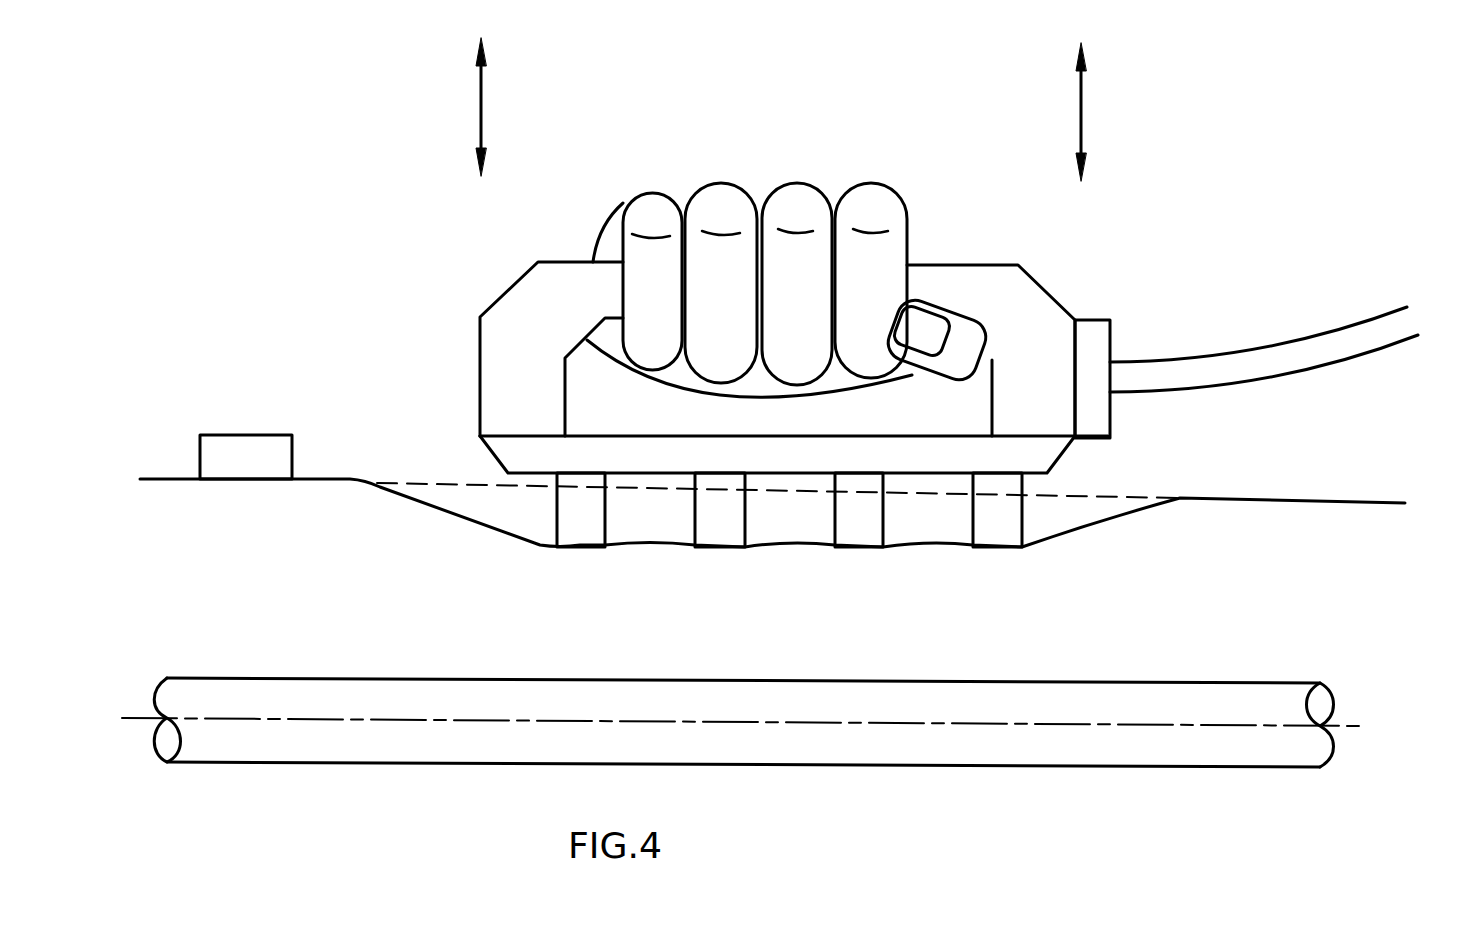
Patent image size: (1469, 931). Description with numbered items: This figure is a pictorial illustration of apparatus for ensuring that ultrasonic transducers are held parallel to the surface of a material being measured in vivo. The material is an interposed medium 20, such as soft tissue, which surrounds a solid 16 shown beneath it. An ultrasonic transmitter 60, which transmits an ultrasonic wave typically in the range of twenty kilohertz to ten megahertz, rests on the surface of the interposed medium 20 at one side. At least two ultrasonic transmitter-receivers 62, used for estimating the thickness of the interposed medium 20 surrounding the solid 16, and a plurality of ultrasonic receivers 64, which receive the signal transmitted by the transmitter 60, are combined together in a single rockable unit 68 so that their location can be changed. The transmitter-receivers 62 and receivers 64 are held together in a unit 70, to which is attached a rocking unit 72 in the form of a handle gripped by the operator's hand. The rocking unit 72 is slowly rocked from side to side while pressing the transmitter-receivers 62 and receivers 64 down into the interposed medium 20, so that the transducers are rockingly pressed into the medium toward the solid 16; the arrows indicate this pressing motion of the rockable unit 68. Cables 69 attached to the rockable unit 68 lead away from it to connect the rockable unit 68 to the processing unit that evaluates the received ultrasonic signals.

The solid 16 is at (252, 685).
The interposed medium 20 is at (205, 582).
The ultrasonic transmitter 60 is at (262, 446).
The ultrasonic transmitter-receivers 62 is at (570, 517).
The ultrasonic receivers 64 is at (693, 520).
The rockable unit 68 is at (462, 203).
The cables 69 is at (1282, 372).
The unit 70 is at (1060, 462).
The rocking unit 72 is at (481, 327).